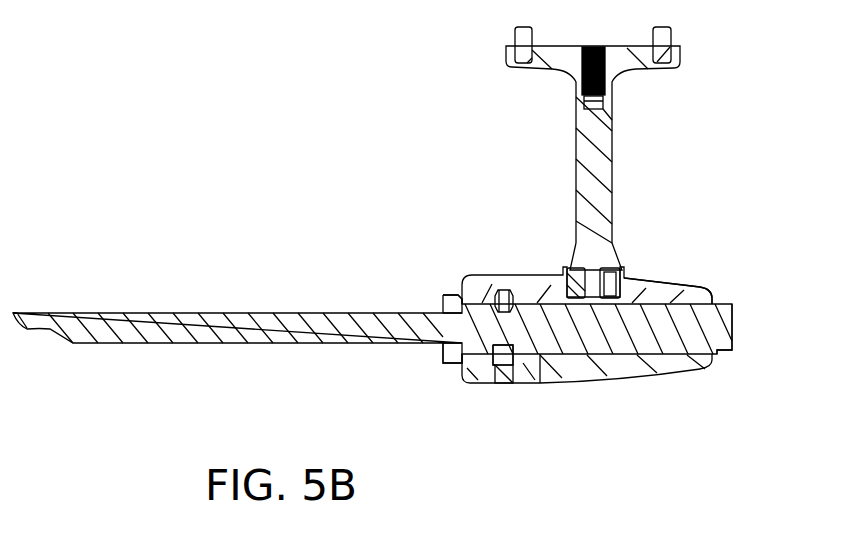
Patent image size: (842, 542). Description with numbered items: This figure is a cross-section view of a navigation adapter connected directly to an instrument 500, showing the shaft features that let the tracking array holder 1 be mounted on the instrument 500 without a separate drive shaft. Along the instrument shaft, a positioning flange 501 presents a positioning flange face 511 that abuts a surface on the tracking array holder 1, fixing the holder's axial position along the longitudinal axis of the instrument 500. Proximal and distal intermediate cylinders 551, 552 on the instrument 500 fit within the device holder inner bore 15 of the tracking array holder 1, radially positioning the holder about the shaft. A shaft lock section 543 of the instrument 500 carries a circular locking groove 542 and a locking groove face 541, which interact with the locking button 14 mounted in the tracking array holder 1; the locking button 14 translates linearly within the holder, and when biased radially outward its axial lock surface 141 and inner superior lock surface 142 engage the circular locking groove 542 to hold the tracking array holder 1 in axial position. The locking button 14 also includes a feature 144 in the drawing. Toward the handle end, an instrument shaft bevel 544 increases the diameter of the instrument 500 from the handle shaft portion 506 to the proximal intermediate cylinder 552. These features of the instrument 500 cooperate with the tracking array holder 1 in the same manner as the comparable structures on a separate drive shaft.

The instrument 500 is at (275, 312).
The tracking array holder 1 is at (598, 382).
The positioning flange 501 is at (455, 365).
The positioning flange face 511 is at (462, 305).
The instrument shaft bevel 544 is at (715, 305).
The distal intermediate cylinder 551 is at (478, 303).
The proximal intermediate cylinder 552 is at (695, 300).
The device holder inner bore 15 is at (622, 290).
The circular locking groove 542 is at (494, 303).
The locking groove face 541 is at (515, 302).
The shaft lock section 543 is at (513, 312).
The locking button 14 is at (508, 312).
The axial lock surface 141 is at (511, 312).
The inner superior lock surface 142 is at (500, 312).
The slot 144 is at (497, 312).
The handle shaft portion 506 is at (732, 352).